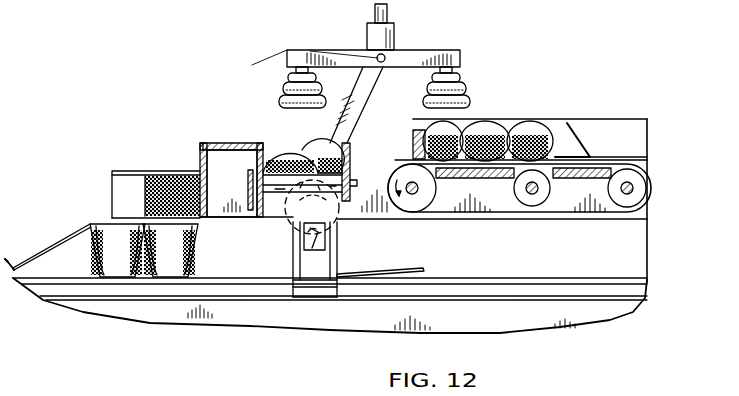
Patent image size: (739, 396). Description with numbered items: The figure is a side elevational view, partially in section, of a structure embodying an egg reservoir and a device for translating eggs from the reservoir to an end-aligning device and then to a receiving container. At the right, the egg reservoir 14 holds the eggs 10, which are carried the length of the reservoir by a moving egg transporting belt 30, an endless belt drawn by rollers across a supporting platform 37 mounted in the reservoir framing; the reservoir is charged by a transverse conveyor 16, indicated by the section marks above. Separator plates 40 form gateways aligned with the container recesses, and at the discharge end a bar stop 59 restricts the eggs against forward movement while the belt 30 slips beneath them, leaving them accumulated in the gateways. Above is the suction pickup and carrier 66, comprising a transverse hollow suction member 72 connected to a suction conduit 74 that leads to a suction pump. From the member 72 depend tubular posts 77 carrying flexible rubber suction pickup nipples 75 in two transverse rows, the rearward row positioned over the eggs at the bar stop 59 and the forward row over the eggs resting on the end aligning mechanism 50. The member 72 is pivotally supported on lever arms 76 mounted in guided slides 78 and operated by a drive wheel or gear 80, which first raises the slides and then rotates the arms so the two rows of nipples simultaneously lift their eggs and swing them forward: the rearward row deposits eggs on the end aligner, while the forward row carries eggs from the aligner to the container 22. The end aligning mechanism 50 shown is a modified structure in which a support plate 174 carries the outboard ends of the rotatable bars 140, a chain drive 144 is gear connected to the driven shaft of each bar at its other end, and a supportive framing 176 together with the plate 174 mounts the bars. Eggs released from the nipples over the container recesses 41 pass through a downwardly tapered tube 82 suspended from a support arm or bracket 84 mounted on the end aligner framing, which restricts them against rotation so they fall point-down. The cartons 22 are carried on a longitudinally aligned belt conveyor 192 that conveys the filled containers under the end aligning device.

The eggs 10 is at (532, 125).
The egg reservoir 14 is at (605, 158).
The transverse conveyor 16 is at (193, 13).
The container 22 is at (62, 234).
The egg transporting belt 30 is at (565, 175).
The supporting platform 37 is at (468, 180).
The separator plate 40 is at (565, 124).
The container recess 41 is at (186, 223).
The end aligning mechanism 50 is at (249, 142).
The bar stop 59 is at (413, 140).
The suction pickup and carrier 66 is at (437, 50).
The suction member 72 is at (310, 50).
The suction conduit 74 is at (387, 7).
The suction pickup nipple 75 is at (282, 84).
The lever arm 76 is at (375, 89).
The tubular post 77 is at (310, 72).
The guided slide 78 is at (306, 242).
The drive wheel or gear 80 is at (345, 228).
The downwardly tapered tube 82 is at (143, 183).
The support arm or bracket 84 is at (116, 182).
The rotatable bar 140 is at (273, 190).
The chain drive 144 is at (248, 190).
The support plate 174 is at (350, 165).
The supportive framing 176 is at (212, 142).
The belt conveyor 192 is at (517, 286).